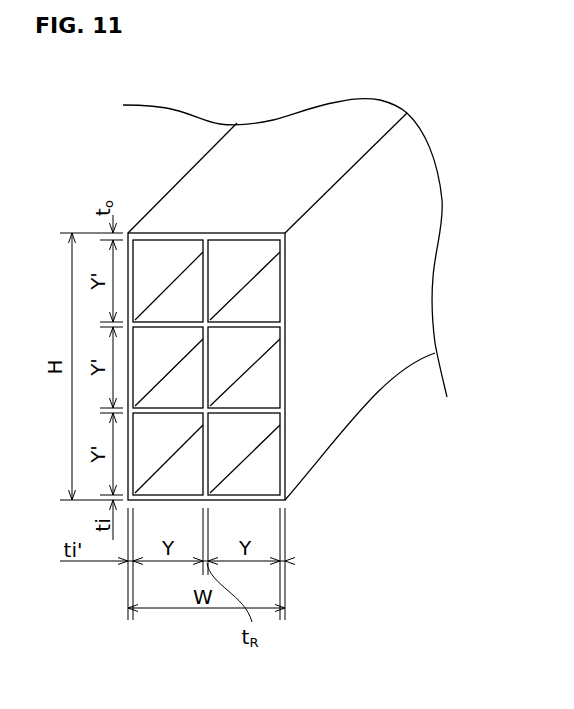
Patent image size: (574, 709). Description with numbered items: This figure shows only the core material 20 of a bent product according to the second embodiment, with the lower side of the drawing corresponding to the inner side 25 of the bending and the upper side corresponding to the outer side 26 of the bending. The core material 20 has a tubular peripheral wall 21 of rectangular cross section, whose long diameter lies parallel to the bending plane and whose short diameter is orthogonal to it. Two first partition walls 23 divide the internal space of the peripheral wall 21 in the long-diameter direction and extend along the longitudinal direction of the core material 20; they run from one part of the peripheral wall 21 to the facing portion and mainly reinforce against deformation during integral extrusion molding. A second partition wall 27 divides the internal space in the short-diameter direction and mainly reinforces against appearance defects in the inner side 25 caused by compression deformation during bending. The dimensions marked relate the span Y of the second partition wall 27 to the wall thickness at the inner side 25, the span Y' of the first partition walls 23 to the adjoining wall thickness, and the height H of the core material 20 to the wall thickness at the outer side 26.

The core material 20 is at (168, 207).
The peripheral wall 21 is at (153, 228).
The first partition wall 23 is at (248, 317).
The inner side of bending 25 is at (253, 511).
The outer side of bending 26 is at (273, 151).
The second partition wall 27 is at (217, 450).